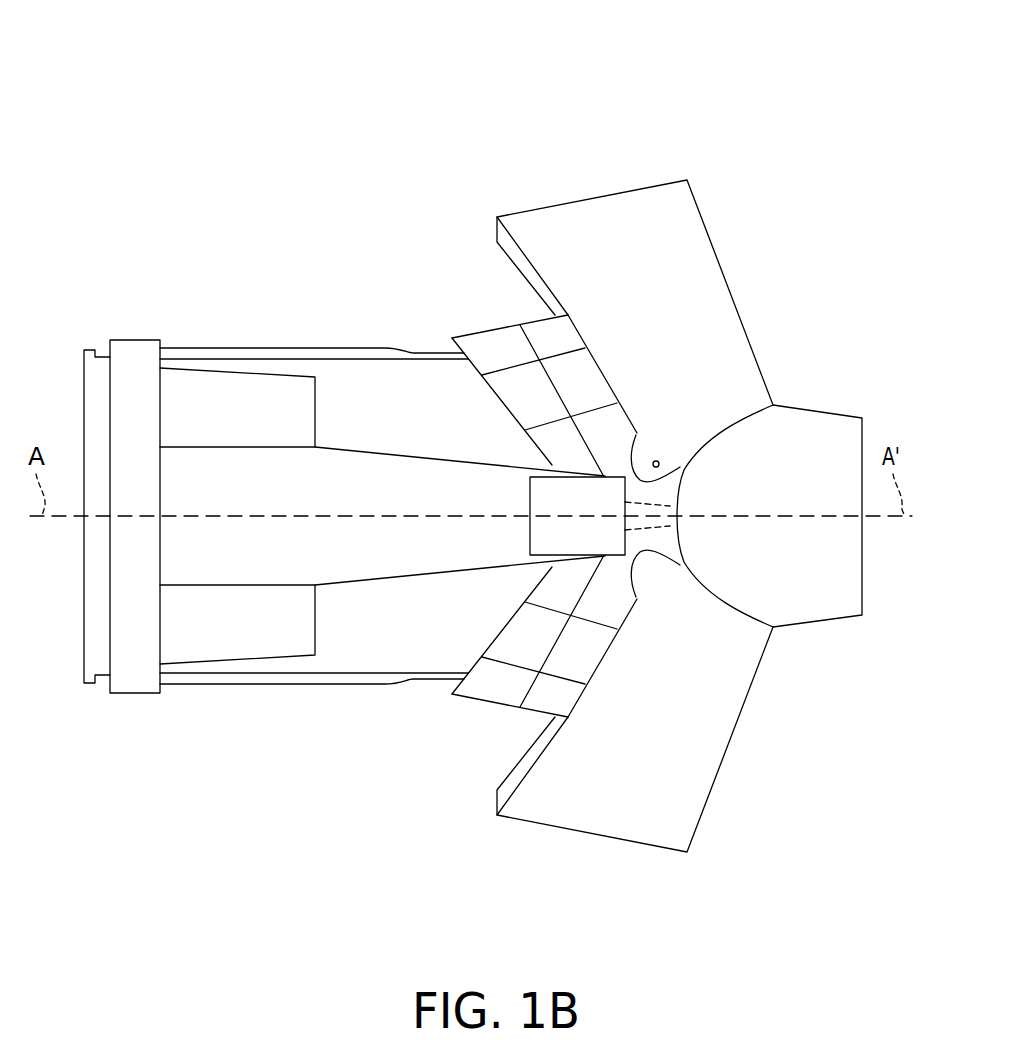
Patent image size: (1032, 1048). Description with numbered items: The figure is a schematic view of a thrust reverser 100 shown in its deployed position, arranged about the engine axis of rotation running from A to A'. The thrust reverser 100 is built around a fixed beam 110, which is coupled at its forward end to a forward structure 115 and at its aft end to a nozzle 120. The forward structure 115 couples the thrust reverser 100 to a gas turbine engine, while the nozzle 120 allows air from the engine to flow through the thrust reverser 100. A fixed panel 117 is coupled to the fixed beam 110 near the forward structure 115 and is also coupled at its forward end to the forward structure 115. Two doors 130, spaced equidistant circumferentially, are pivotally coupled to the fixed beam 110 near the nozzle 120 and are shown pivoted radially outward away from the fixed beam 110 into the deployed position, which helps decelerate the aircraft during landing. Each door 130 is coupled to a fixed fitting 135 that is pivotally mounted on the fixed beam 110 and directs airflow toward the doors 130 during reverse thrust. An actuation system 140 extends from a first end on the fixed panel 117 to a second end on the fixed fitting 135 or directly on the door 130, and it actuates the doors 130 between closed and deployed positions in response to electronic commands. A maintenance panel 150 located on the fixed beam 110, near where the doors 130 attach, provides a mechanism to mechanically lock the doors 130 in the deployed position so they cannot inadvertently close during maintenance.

The thrust reverser 100 is at (762, 103).
The fixed beam 110 is at (177, 547).
The forward structure 115 is at (127, 345).
The fixed panel 117 is at (235, 382).
The nozzle 120 is at (863, 432).
The doors 130 is at (712, 282).
The fixed fitting 135 is at (500, 340).
The actuation system 140 is at (357, 352).
The maintenance panel 150 is at (595, 490).